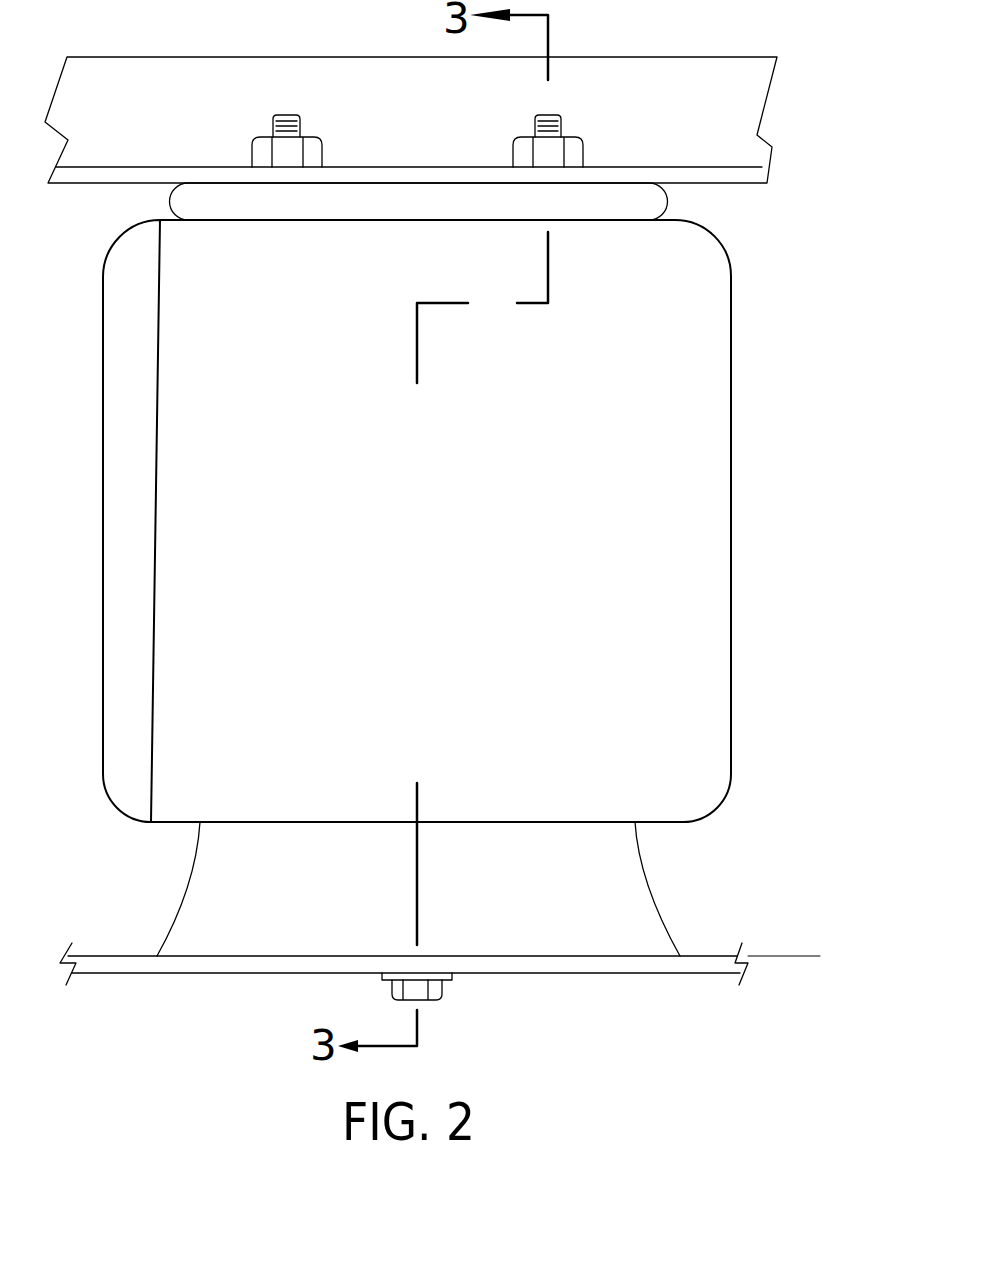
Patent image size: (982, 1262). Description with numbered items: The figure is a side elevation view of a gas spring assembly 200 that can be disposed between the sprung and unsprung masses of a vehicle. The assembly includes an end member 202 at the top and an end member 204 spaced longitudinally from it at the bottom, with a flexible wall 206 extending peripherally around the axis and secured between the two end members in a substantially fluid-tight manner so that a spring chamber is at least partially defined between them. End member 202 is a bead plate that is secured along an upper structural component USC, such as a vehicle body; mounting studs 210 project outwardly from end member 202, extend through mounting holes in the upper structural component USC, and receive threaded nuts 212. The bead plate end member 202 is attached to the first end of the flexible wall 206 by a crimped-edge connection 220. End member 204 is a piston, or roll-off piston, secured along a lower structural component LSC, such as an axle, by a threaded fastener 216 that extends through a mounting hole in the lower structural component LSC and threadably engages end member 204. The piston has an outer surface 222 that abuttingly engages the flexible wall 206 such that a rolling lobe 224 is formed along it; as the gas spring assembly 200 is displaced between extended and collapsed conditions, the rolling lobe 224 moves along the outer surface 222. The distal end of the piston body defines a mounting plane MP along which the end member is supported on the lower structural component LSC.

The gas spring assembly 200 is at (748, 308).
The end member 202 is at (648, 203).
The end member 204 is at (454, 889).
The flexible wall 206 is at (455, 546).
The mounting studs 210 is at (300, 116).
The threaded nuts 212 is at (313, 155).
The threaded fastener 216 is at (438, 992).
The crimped-edge connection 220 is at (170, 202).
The outer surface 222 is at (178, 913).
The rolling lobe 224 is at (168, 823).
The upper structural component USC is at (220, 80).
The lower structural component LSC is at (172, 965).
The mounting plane MP is at (768, 957).